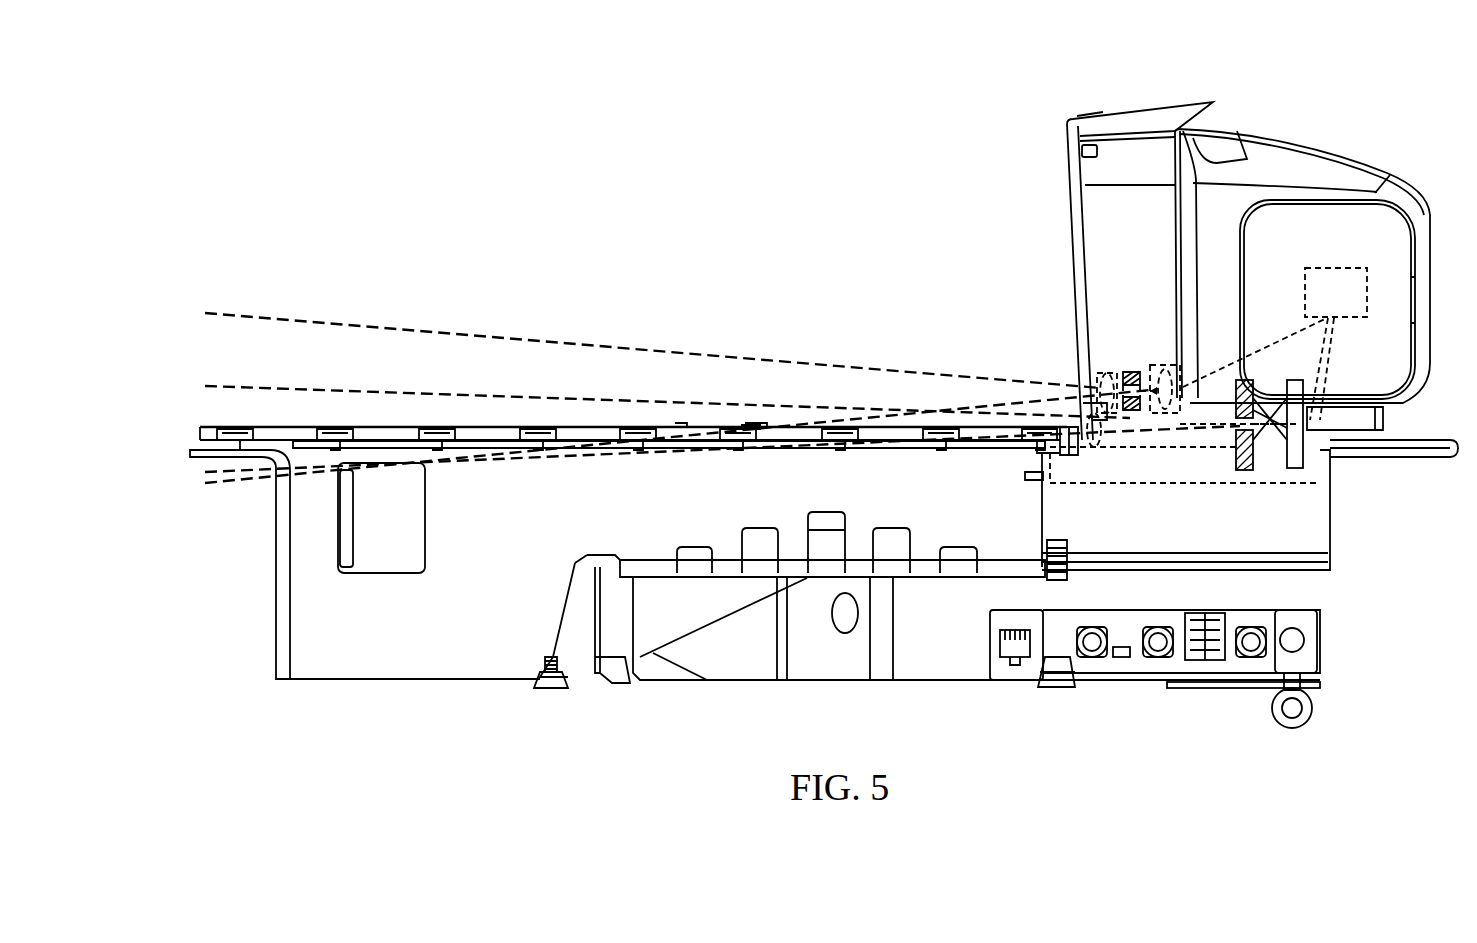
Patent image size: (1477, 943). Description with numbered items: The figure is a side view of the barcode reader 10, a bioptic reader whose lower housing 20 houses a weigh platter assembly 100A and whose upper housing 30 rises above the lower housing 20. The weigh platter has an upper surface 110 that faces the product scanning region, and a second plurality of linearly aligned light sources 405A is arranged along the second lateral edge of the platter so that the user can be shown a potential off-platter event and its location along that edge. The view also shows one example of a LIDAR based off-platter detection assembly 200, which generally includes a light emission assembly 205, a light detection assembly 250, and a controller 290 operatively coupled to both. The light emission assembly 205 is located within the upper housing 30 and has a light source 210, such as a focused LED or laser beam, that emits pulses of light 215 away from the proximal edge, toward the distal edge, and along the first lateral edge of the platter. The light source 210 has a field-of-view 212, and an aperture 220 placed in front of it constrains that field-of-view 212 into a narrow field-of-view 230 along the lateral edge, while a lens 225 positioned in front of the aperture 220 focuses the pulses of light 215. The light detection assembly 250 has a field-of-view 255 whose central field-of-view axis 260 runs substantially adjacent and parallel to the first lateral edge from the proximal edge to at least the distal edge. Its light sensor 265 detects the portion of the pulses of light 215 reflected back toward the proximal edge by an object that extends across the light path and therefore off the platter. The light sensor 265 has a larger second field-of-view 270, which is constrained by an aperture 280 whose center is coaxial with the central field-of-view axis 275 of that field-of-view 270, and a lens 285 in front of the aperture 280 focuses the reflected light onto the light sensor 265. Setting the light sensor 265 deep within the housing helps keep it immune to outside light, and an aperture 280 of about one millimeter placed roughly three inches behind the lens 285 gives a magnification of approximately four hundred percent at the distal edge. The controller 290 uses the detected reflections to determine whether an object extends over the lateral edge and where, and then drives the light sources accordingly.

The barcode reader 10 is at (922, 162).
The lower housing 20 is at (268, 572).
The upper housing 30 is at (1153, 86).
The weigh platter 100A is at (398, 418).
The upper surface 110 is at (303, 426).
The off-platter detection assembly 200 is at (1152, 496).
The light emission assembly 205 is at (1143, 356).
The light source 210 is at (1175, 378).
The field-of-view 212 is at (1165, 365).
The pulses of light 215 is at (622, 363).
The aperture 220 is at (1098, 383).
The lens 225 is at (1097, 387).
The narrow field-of-view 230 is at (515, 336).
The light detection assembly 250 is at (1269, 493).
The field-of-view 255 is at (577, 462).
The central field-of-view axis 260 is at (752, 427).
The light sensor 265 is at (1303, 455).
The second field-of-view 270 is at (1270, 462).
The central field-of-view axis 275 is at (752, 427).
The aperture 280 is at (1236, 440).
The lens 285 is at (1090, 452).
The controller 290 is at (1336, 268).
The second plurality of linearly aligned light sources 405A is at (205, 431).